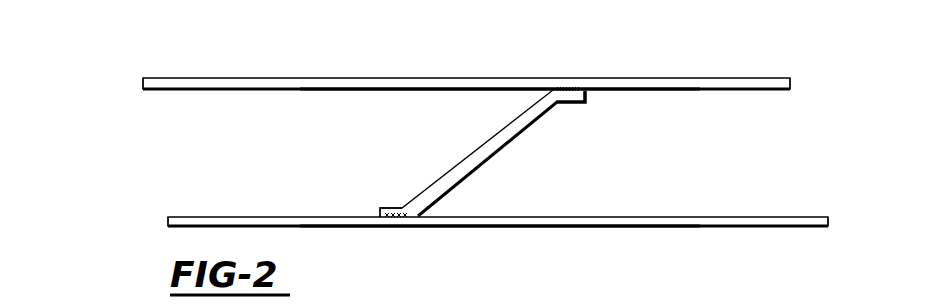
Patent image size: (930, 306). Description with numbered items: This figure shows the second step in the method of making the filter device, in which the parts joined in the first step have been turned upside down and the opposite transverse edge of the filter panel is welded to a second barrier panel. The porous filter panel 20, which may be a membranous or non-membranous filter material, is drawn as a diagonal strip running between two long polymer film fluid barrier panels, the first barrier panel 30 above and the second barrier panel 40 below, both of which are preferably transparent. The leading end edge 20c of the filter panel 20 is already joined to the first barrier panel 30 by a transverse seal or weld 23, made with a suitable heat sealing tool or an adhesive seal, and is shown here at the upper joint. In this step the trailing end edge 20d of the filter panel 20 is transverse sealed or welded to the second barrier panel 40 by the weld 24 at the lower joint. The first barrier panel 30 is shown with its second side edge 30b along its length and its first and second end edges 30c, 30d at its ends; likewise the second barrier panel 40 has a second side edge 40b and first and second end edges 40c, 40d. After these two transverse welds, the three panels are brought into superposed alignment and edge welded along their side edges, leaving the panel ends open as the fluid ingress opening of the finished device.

The porous filter panel 20 is at (485, 152).
The leading end edge 20c is at (587, 96).
The trailing end edge 20d is at (380, 209).
The transverse weld 23 is at (572, 88).
The transverse weld 24 is at (395, 220).
The first polymer film fluid barrier panel 30 is at (710, 78).
The second side edge 30b is at (675, 89).
The first end edge 30c is at (790, 85).
The second end edge 30d is at (143, 85).
The second polymer film fluid barrier panel 40 is at (742, 216).
The second side edge 40b is at (575, 228).
The first end edge 40c is at (828, 220).
The second end edge 40d is at (168, 220).